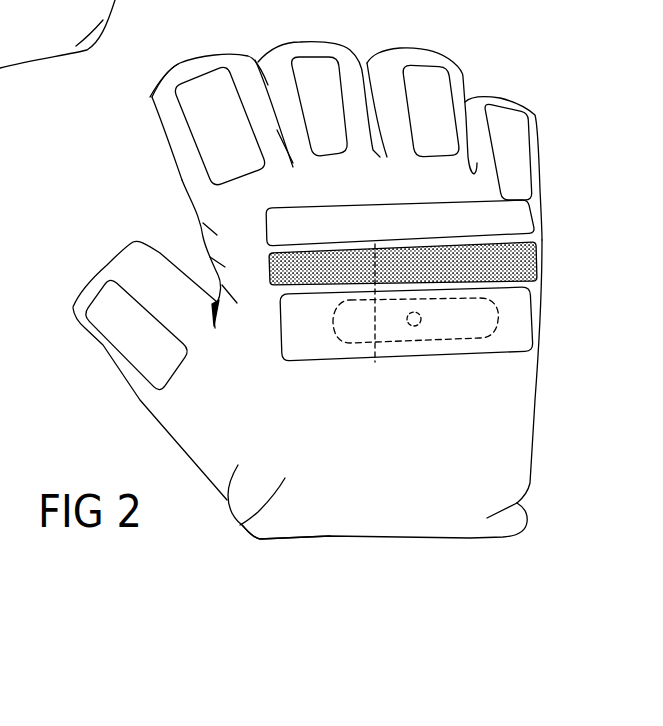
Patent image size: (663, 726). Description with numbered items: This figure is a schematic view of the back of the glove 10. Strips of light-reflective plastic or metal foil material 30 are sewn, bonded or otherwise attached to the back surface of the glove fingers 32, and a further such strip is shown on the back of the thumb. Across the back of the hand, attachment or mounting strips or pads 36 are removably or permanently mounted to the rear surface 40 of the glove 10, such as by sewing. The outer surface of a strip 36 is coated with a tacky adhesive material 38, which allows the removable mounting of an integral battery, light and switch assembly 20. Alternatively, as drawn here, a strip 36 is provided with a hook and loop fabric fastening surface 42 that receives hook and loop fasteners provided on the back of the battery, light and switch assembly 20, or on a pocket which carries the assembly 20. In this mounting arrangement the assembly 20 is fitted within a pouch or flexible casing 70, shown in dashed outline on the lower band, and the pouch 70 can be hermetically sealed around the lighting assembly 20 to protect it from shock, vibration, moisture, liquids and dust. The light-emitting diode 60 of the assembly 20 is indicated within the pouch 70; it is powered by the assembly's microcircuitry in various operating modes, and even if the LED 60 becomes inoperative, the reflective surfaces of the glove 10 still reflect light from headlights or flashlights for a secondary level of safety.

The glove 10 is at (100, 190).
The battery, light and switch assembly 20 is at (352, 336).
The strips of light-reflective material 30 is at (307, 62).
The glove fingers 32 is at (165, 127).
The mounting strip or pad 36 is at (265, 228).
The adhesive material 38 is at (378, 227).
The rear surface of the glove 40 is at (283, 518).
The hook and loop fabric fastening surface 42 is at (270, 251).
The light-emitting diode 60 is at (421, 324).
The pouch or flexible casing 70 is at (295, 343).